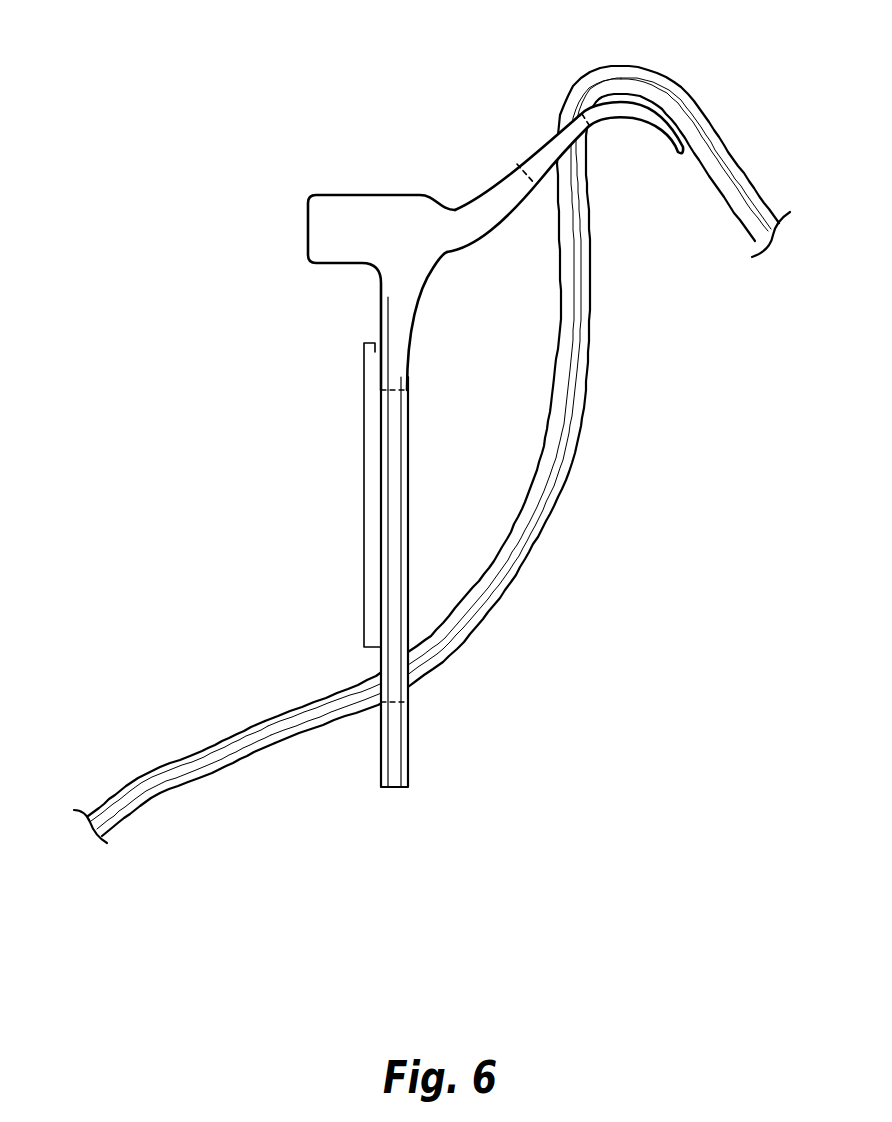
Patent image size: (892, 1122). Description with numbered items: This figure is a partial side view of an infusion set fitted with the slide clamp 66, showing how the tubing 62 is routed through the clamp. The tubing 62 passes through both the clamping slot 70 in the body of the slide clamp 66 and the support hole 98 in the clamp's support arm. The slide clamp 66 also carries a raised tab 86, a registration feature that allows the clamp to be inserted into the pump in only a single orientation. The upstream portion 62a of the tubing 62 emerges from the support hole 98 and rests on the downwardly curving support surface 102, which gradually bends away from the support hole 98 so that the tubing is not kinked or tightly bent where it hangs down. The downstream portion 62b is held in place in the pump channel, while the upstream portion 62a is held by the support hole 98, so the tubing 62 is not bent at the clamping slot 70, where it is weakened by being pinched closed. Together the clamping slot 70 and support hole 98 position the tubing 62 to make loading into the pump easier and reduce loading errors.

The tubing 62 is at (553, 442).
The upstream portion of the tubing 62a is at (703, 147).
The downstream portion of the tubing 62b is at (152, 777).
The slide clamp 66 is at (400, 278).
The clamping slot 70 is at (414, 542).
The raised tab 86 is at (378, 545).
The support hole 98 is at (538, 134).
The support surface 102 is at (633, 117).